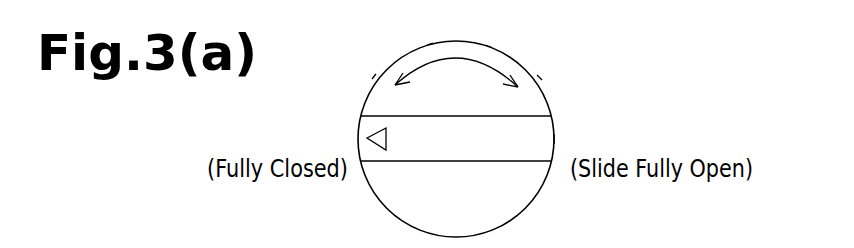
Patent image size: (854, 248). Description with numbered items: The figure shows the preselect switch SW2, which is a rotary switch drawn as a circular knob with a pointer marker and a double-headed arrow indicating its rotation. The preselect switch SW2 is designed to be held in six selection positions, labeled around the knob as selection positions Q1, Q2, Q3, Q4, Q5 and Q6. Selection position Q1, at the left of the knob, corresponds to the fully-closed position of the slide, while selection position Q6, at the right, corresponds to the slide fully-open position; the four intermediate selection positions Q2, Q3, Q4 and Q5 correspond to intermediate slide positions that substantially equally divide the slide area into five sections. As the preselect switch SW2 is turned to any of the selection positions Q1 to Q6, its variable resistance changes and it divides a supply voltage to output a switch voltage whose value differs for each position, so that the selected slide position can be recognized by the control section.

The preselect switch SW2 is at (518, 57).
The selection position Q1 is at (353, 137).
The selection position Q2 is at (373, 78).
The selection position Q3 is at (427, 40).
The selection position Q4 is at (489, 40).
The selection position Q5 is at (541, 79).
The selection position Q6 is at (560, 139).